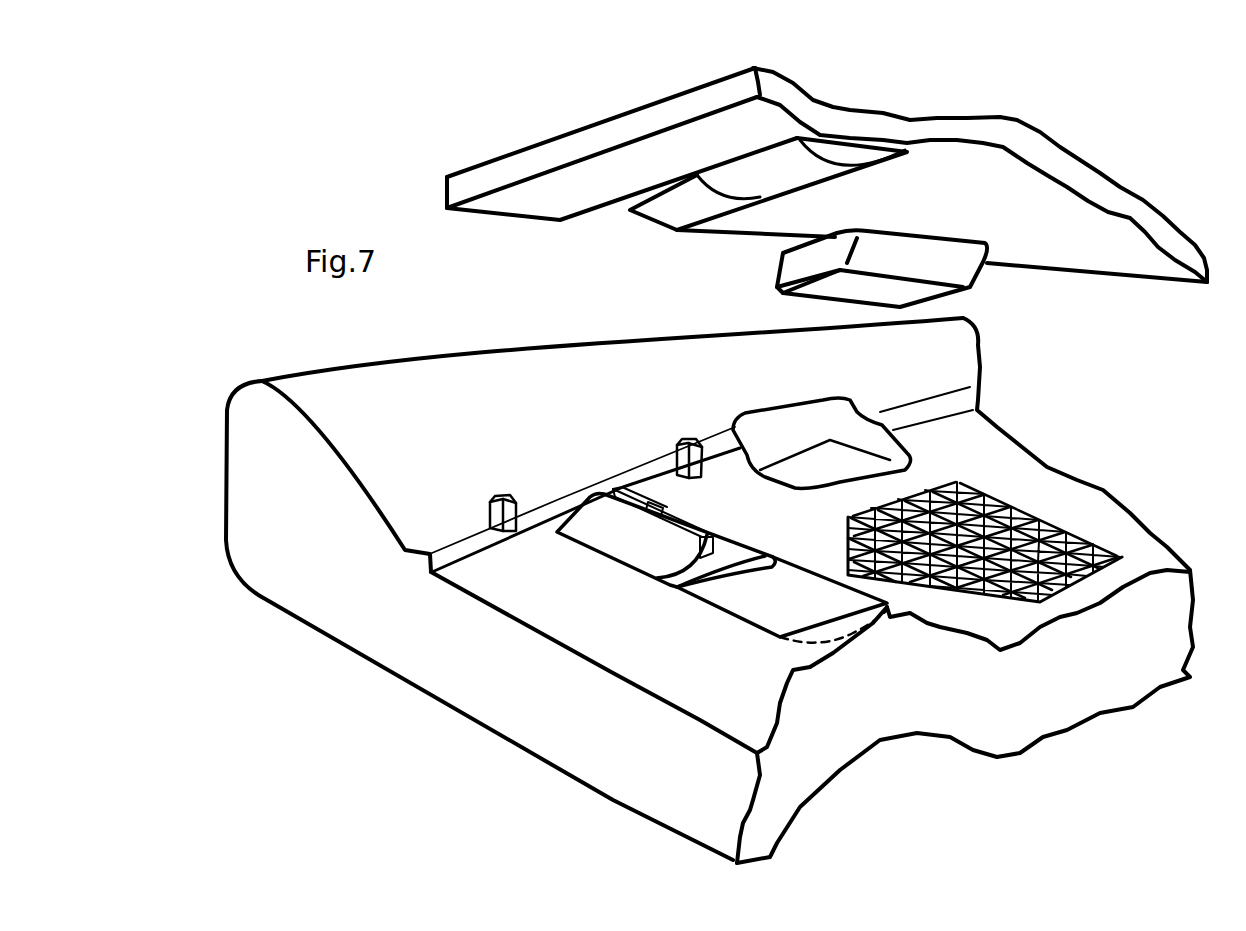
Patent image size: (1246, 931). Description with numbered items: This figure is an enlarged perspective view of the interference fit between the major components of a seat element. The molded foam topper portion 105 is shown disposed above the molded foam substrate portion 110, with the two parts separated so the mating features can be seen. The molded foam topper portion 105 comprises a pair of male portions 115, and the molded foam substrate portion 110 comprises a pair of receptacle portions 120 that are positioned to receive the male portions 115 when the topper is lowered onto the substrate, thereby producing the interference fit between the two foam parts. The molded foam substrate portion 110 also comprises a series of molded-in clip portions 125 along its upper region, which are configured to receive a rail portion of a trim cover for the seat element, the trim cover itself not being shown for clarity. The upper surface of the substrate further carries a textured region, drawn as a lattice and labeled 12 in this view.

The molded foam topper portion 105 is at (1047, 155).
The molded foam substrate portion 110 is at (325, 390).
The male portions 115 is at (818, 457).
The receptacle portions 120 is at (780, 427).
The molded-in clip portions 125 is at (676, 475).
The grid lattice 12 is at (1045, 510).